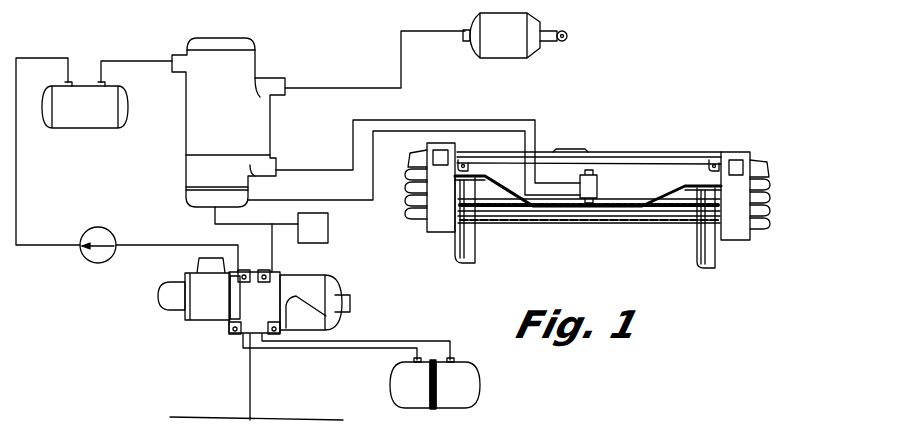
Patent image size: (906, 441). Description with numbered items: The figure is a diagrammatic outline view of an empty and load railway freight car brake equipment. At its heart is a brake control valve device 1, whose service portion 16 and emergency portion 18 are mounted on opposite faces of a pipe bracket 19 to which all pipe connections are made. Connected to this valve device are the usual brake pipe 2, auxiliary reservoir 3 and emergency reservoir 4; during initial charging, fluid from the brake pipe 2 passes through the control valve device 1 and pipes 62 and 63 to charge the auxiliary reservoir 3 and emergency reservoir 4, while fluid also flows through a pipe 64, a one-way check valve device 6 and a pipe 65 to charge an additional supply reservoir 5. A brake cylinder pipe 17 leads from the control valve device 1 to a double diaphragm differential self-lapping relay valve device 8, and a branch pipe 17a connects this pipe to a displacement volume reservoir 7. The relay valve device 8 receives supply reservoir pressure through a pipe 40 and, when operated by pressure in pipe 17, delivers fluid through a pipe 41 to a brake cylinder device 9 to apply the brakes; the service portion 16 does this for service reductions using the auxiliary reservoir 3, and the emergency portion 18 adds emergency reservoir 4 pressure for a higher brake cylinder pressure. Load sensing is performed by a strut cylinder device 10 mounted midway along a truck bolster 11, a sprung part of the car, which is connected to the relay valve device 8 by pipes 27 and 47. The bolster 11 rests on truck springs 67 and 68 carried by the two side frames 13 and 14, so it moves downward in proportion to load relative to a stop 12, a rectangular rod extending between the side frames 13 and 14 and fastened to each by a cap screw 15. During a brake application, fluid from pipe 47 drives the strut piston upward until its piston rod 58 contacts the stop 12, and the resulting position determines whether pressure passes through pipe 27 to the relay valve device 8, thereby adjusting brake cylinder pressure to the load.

The brake control valve device 1 is at (280, 273).
The brake pipe 2 is at (244, 418).
The auxiliary reservoir 3 is at (405, 395).
The emergency reservoir 4 is at (466, 395).
The supply reservoir 5 is at (86, 118).
The one-way check valve device 6 is at (110, 236).
The displacement volume reservoir 7 is at (328, 228).
The relay valve device 8 is at (186, 140).
The brake cylinder device 9 is at (499, 58).
The strut cylinder device 10 is at (598, 186).
The truck bolster 11 is at (630, 208).
The stop 12 is at (640, 172).
The side frame 13 is at (440, 228).
The side frame 14 is at (735, 240).
The cap screw 15 is at (466, 161).
The service portion 16 is at (197, 316).
The brake cylinder pipe 17 is at (272, 236).
The branch pipe 17a is at (287, 226).
The emergency portion 18 is at (312, 283).
The pipe bracket 19 is at (236, 320).
The pipe 27 is at (324, 166).
The pipe 40 is at (155, 58).
The pipe 41 is at (344, 86).
The pipe 47 is at (348, 198).
The piston rod 58 is at (590, 158).
The pipe 62 is at (310, 352).
The pipe 63 is at (394, 342).
The pipe 64 is at (186, 244).
The pipe 65 is at (16, 190).
The truck spring 67 is at (407, 208).
The truck spring 68 is at (762, 212).